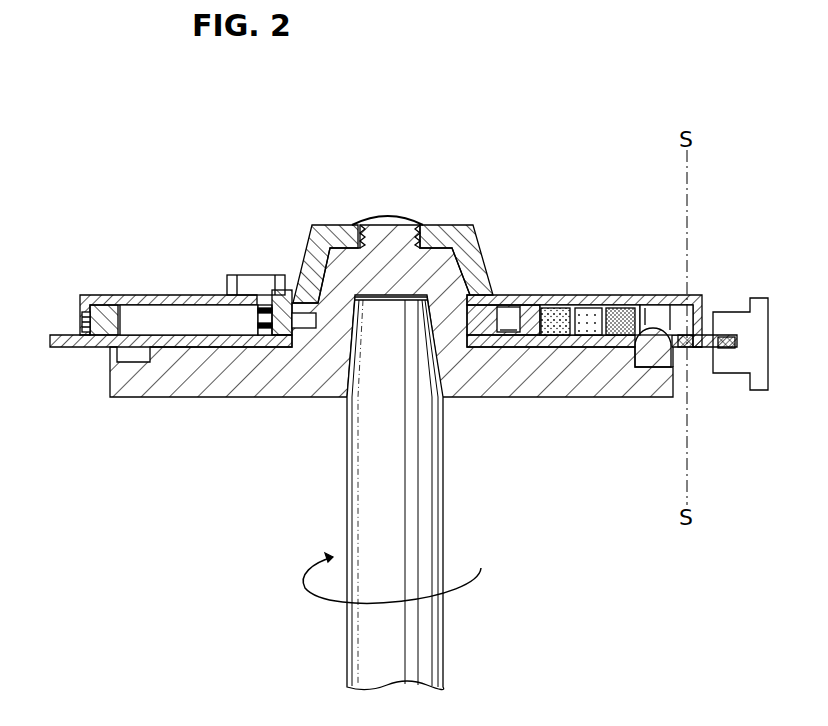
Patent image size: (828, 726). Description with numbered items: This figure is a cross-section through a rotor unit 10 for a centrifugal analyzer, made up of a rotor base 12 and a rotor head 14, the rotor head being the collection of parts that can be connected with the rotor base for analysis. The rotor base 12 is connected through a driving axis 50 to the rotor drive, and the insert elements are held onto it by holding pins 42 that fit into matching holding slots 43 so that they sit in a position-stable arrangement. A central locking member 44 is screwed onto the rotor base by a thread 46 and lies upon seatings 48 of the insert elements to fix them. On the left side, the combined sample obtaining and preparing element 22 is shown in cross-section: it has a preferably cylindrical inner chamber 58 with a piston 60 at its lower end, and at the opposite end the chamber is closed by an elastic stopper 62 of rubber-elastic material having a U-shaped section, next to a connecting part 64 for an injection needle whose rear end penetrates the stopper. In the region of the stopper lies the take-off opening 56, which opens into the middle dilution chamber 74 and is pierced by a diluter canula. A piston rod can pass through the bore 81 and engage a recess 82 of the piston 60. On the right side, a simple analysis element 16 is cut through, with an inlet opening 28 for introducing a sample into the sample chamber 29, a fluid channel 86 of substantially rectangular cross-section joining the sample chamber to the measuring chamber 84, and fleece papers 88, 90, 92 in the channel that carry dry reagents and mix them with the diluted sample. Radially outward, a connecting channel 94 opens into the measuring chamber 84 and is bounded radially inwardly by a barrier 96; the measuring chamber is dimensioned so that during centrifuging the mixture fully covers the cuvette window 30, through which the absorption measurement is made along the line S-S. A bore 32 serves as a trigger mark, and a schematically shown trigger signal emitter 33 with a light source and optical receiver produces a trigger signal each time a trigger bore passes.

The rotor unit 10 is at (595, 184).
The rotor base 12 is at (470, 398).
The rotor head 14 is at (98, 289).
The simple analysis element 16 is at (497, 297).
The combined sample obtaining and preparing element 22 is at (142, 295).
The inlet opening 28 is at (507, 305).
The sample chamber 29 is at (512, 318).
The cuvette window 30 is at (699, 305).
The bore 32 is at (726, 338).
The trigger signal emitter 33 is at (760, 390).
The holding pin 42 is at (650, 368).
The holding slot 43 is at (655, 380).
The central locking member 44 is at (322, 226).
The thread 46 is at (410, 221).
The seating 48 is at (300, 290).
The driving axis 50 is at (443, 635).
The take-off opening 56 is at (275, 300).
The inner chamber 58 is at (213, 330).
The piston 60 is at (97, 340).
The elastic stopper 62 is at (265, 335).
The connecting part 64 is at (300, 335).
The dilution chamber 74 is at (232, 276).
The bore 81 is at (85, 312).
The recess 82 is at (80, 323).
The measuring chamber 84 is at (680, 306).
The fluid channel 86 is at (550, 308).
The fleece paper 88 is at (553, 333).
The fleece paper 90 is at (586, 333).
The fleece paper 92 is at (612, 333).
The connecting channel 94 is at (645, 306).
The barrier 96 is at (668, 320).